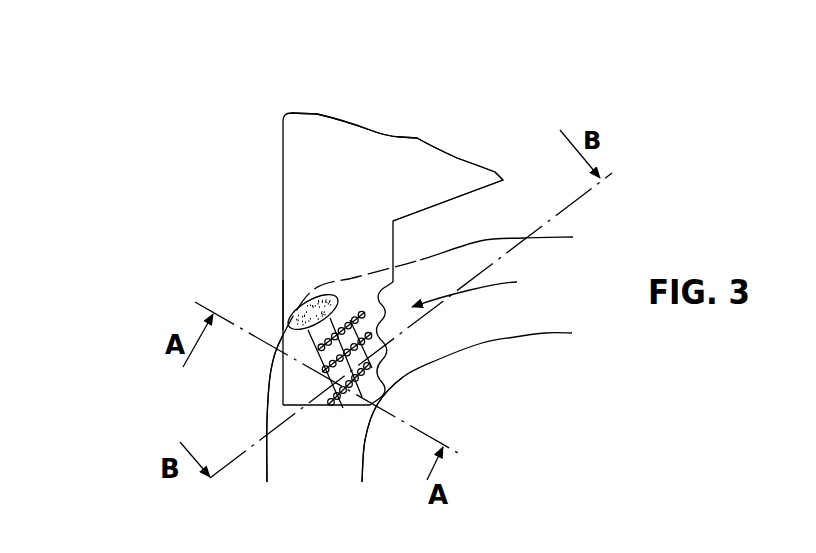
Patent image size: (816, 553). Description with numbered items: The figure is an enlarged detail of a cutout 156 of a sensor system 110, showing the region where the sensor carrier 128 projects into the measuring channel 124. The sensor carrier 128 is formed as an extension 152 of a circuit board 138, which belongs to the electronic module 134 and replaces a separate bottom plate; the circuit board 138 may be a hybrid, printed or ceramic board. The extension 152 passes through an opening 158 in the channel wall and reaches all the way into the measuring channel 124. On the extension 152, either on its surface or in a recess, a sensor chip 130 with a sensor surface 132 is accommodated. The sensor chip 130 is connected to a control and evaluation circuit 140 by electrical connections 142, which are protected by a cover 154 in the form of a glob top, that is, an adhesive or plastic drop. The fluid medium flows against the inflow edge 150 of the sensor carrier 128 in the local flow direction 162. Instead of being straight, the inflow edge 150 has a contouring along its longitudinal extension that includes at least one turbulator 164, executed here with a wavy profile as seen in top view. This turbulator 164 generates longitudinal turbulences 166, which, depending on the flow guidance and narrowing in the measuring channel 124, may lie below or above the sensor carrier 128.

The sensor device 110 is at (417, 112).
The measuring channel 124 is at (430, 333).
The sensor carrier 128 is at (200, 363).
The sensor chip 130 is at (234, 412).
The sensor surface 132 is at (410, 342).
The electronic module 134 is at (315, 160).
The circuit board 138 is at (362, 209).
The control and evaluation circuit 140 is at (370, 160).
The electrical connections 142 is at (260, 240).
The inflow edge 150 is at (453, 248).
The extension 152 is at (325, 337).
The cover 154 is at (312, 292).
The cutout 156 is at (258, 297).
The opening 158 is at (283, 337).
The local flow direction 162 is at (478, 290).
The turbulator 164 is at (400, 303).
The longitudinal turbulences 166 is at (348, 402).